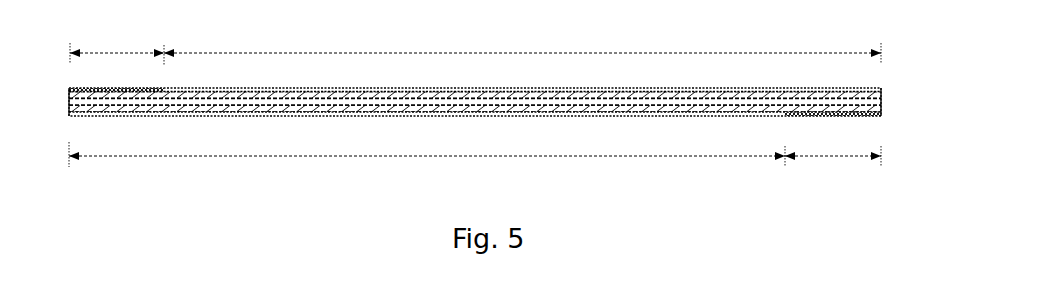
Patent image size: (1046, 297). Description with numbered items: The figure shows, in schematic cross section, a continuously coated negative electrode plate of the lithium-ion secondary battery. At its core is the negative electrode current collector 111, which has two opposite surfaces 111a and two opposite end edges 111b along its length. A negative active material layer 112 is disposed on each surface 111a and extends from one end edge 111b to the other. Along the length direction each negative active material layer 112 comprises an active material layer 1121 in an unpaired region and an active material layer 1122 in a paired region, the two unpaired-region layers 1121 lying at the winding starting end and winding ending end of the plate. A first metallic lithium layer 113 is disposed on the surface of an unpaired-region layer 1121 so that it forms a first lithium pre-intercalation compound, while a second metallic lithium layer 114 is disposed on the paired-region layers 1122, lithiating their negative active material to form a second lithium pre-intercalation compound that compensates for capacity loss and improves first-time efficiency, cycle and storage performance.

The negative electrode current collector 111 is at (882, 106).
The surface of the negative electrode current collector 111a is at (277, 81).
The end edge of the negative electrode current collector 111b is at (68, 103).
The negative active material layer 112 is at (712, 126).
The active material layer in unpaired region 1121 is at (475, 106).
The active material layer in paired region 1122 is at (475, 107).
The first metallic lithium layer 113 is at (160, 89).
The second metallic lithium layer 114 is at (525, 88).